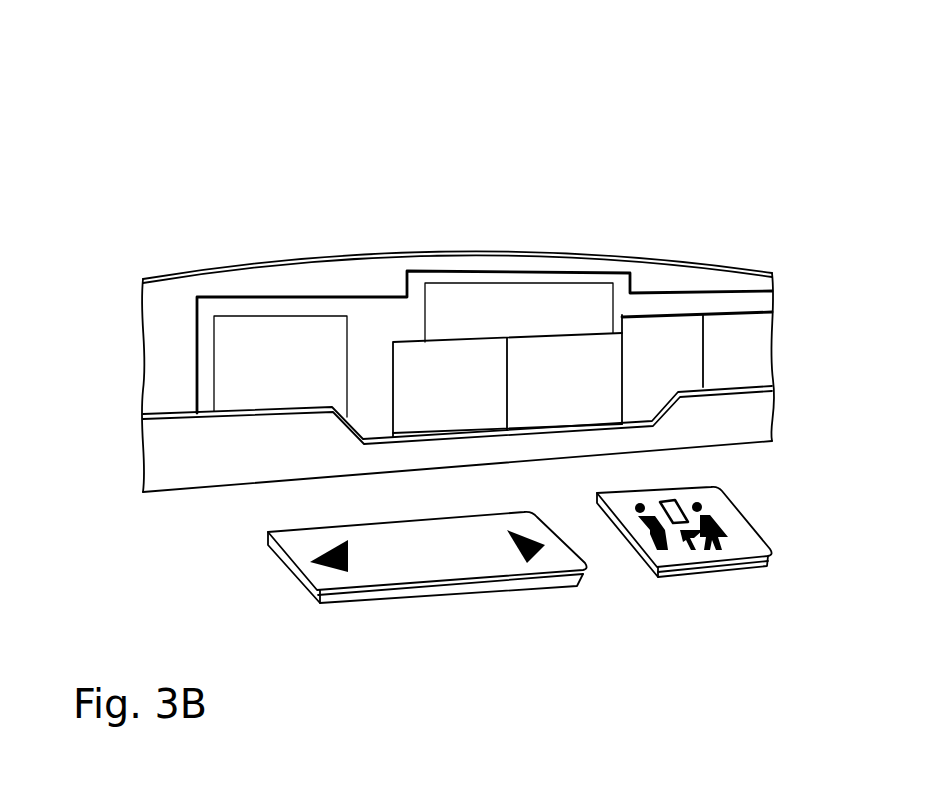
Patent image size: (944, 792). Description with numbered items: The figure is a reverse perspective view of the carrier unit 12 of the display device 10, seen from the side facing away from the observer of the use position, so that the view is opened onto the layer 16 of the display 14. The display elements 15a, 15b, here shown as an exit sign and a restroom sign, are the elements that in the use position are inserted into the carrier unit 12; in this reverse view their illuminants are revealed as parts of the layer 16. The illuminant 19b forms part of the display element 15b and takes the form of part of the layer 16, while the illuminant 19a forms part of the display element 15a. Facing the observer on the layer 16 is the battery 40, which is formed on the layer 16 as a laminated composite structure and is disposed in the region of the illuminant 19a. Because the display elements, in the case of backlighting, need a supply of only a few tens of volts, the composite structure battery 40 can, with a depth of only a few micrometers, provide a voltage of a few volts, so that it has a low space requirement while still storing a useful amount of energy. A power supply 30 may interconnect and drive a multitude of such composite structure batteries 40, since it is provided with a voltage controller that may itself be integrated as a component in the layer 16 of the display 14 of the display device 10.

The display device 10 is at (418, 128).
The carrier unit 12 is at (752, 418).
The display 14 is at (757, 208).
The display element 15a is at (463, 587).
The display element 15b is at (717, 568).
The layer 16 is at (255, 305).
The illuminant 19a is at (518, 300).
The illuminant 19b is at (316, 343).
The power supply 30 is at (588, 225).
The battery 40 is at (569, 402).